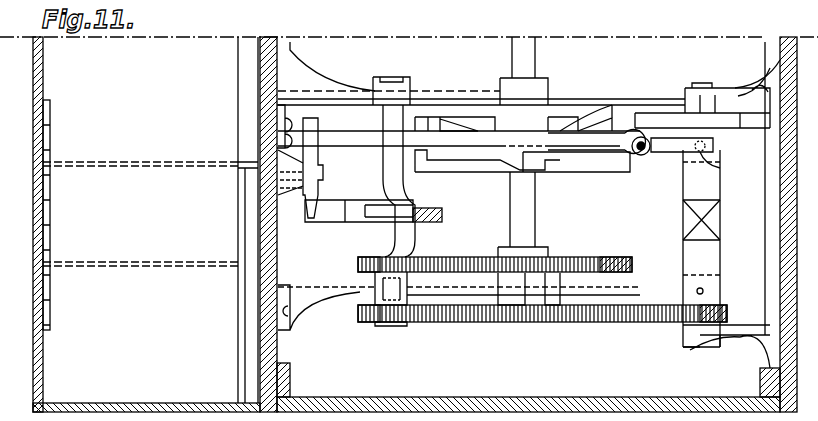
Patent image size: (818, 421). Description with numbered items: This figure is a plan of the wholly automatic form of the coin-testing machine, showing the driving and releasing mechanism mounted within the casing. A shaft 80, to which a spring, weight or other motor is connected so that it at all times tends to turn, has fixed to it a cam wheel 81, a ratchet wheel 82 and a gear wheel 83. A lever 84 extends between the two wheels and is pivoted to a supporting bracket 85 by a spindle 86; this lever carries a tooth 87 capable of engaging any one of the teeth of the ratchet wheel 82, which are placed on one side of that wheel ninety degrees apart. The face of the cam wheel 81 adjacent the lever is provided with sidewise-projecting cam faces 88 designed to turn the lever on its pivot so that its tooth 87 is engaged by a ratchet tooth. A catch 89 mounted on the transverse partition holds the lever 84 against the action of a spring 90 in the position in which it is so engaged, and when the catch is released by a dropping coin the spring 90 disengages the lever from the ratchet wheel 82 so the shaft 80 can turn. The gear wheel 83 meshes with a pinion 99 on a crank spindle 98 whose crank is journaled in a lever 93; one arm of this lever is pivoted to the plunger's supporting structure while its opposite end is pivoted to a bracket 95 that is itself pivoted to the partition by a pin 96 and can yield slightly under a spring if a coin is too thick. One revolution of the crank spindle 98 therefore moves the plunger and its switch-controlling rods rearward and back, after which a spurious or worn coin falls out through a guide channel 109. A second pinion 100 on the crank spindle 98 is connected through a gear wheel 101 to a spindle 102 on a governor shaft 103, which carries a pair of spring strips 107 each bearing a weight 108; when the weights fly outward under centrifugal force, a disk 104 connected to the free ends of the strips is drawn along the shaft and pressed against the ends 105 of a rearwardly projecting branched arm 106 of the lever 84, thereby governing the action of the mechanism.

The shaft 80 is at (535, 63).
The cam wheel 81 is at (596, 113).
The ratchet wheel 82 is at (576, 172).
The gear wheel 83 is at (590, 265).
The lever 84 is at (371, 136).
The supporting bracket 85 is at (740, 368).
The spindle 86 is at (646, 160).
The tooth 87 is at (522, 160).
The cam faces 88 is at (468, 123).
The catch 89 is at (313, 160).
The spring 90 is at (294, 124).
The lever 93 is at (428, 224).
The bracket 95 is at (346, 196).
The pin 96 is at (459, 293).
The crank spindle 98 is at (388, 173).
The pinion 99 is at (358, 263).
The second pinion 100 is at (362, 326).
The gear wheel 101 is at (470, 323).
The spindle 102 is at (725, 294).
The governor shaft 103 is at (695, 352).
The disk 104 is at (745, 128).
The ends 105 is at (700, 128).
The branched arm 106 is at (721, 168).
The spring strips 107 is at (692, 256).
The weight 108 is at (701, 220).
The guide channel 109 is at (247, 215).